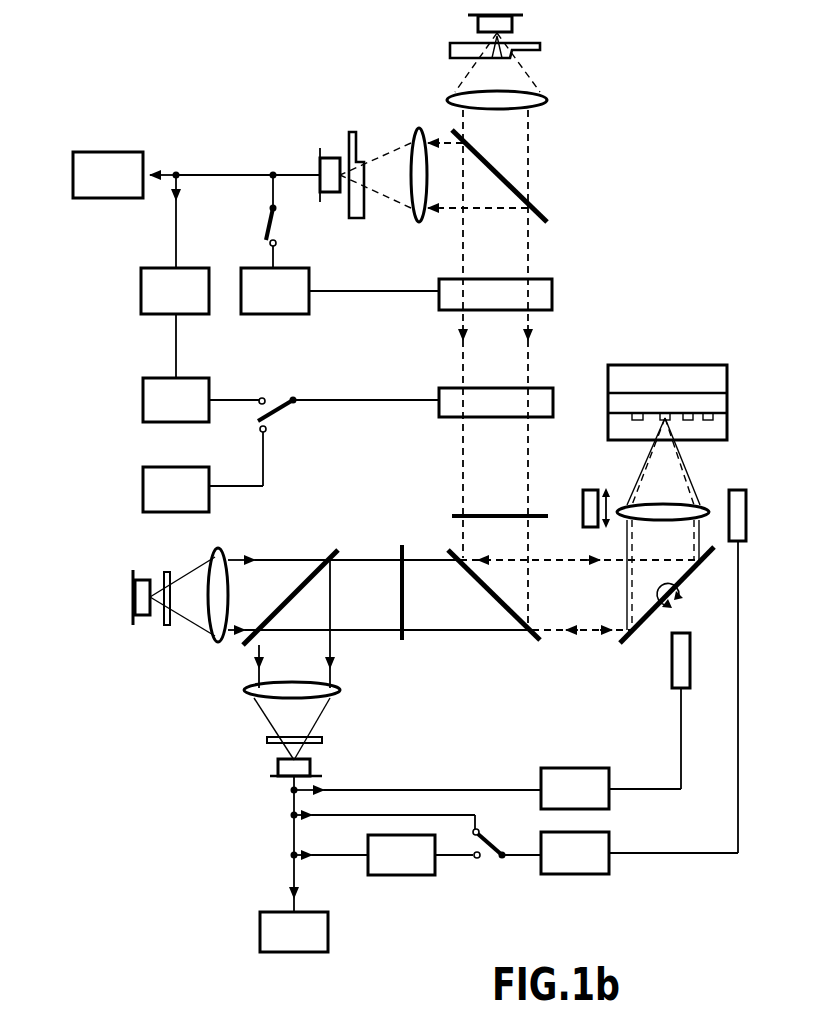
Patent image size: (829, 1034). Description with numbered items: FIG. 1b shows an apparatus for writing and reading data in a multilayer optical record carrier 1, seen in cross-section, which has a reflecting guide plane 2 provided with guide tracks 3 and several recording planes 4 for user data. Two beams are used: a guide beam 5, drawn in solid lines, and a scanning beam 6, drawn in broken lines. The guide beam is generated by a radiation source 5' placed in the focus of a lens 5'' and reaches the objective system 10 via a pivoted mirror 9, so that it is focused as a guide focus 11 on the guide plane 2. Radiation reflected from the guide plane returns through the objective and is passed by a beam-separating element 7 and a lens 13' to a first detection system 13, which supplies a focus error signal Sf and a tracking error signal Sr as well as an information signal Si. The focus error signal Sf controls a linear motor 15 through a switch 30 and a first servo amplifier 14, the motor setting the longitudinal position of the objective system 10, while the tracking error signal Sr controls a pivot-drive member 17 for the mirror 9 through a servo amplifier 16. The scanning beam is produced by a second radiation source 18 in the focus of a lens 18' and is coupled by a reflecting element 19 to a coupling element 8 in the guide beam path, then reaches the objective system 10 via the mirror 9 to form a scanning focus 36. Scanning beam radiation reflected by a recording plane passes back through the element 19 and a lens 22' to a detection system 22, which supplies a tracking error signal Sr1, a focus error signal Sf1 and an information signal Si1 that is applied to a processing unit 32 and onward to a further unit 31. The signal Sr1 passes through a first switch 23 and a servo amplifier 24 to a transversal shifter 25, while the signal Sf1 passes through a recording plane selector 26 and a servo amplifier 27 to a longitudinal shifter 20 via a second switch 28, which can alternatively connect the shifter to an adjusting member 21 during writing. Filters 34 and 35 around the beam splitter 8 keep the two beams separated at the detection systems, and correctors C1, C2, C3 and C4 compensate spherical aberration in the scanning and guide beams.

The optical record carrier 1 is at (718, 294).
The guide plane 2 is at (720, 414).
The guide tracks 3 is at (688, 420).
The recording plane 4 is at (708, 392).
The guide beam 5 is at (373, 544).
The radiation source 5' is at (129, 581).
The lens 5'' is at (235, 582).
The scanning beam 6 is at (482, 489).
The beam-separating element 7 is at (330, 552).
The coupling element 8 is at (536, 645).
The pivoted mirror 9 is at (628, 647).
The objective system 10 is at (706, 506).
The guide focus 11 is at (660, 407).
The first detection system 13 is at (279, 769).
The lens 13' is at (316, 693).
The first servo amplifier 14 is at (600, 844).
The linear motor 15 is at (748, 516).
The servo amplifier 16 is at (578, 776).
The pivot-drive member 17 is at (692, 664).
The second radiation source 18 is at (521, 24).
The lens 18' is at (523, 101).
The reflecting element 19 is at (547, 218).
The longitudinal shifter 20 is at (440, 392).
The adjusting member 21 is at (172, 514).
The detection system 22 is at (325, 160).
The lens 22' is at (413, 156).
The first switch 23 is at (276, 224).
The servo amplifier 24 is at (287, 316).
The transversal shifter 25 is at (552, 296).
The recording plane selector 26 is at (168, 316).
The servo amplifier 27 is at (175, 424).
The second switch 28 is at (284, 420).
The switch 30 is at (488, 863).
The information processing circuit 31 is at (270, 944).
The processing unit 32 is at (103, 158).
The filter 34 is at (405, 644).
The filter 35 is at (548, 512).
The scanning focus 36 is at (665, 418).
The corrector C1 is at (450, 50).
The second corrector C2 is at (358, 222).
The third corrector C3 is at (167, 628).
The corrector C4 is at (267, 740).
The information signal Si1 is at (178, 170).
The focus error signal Sf1 is at (178, 228).
The tracking error signal Sr1 is at (268, 195).
The information signal Si is at (292, 879).
The focus error signal Sf is at (339, 816).
The tracking error signal Sr is at (380, 788).